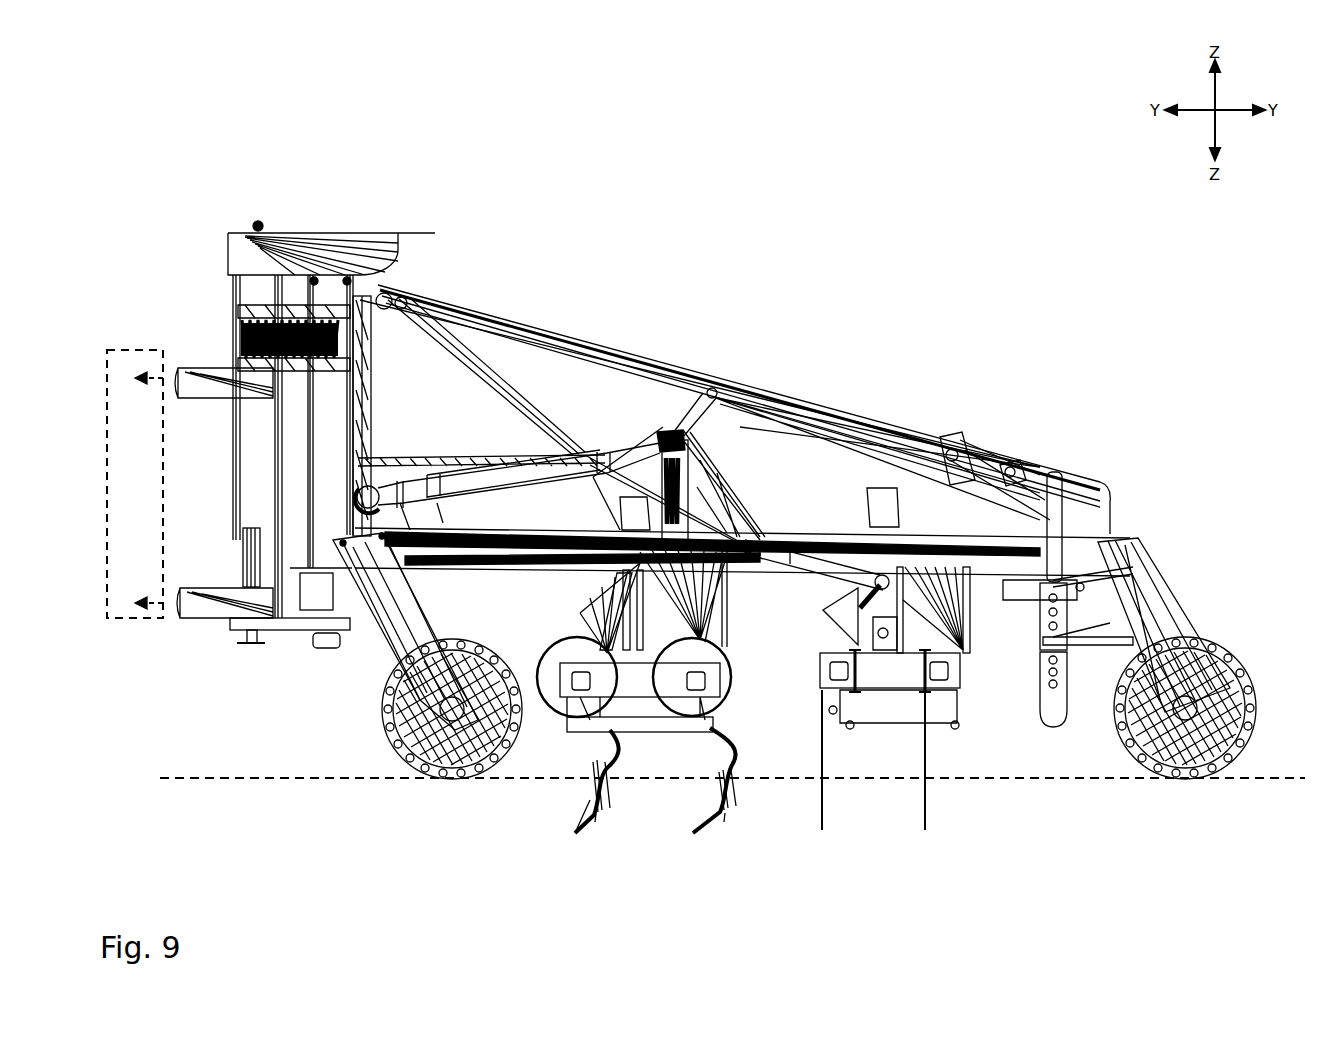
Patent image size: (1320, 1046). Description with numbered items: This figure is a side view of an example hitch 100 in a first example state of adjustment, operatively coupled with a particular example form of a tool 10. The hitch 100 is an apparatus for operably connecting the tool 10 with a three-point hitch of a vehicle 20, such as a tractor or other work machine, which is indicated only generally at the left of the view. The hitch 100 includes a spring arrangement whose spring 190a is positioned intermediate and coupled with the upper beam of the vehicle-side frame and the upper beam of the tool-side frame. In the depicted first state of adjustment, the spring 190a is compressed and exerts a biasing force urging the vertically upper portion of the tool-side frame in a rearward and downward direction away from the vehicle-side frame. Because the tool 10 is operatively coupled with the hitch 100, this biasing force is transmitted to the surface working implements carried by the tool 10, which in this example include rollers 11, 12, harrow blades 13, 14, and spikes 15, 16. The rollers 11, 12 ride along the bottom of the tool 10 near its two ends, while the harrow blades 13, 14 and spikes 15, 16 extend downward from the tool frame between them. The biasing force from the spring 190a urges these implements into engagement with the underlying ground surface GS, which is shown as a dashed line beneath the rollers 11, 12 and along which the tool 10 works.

The hitch 100 is at (286, 138).
The tool 10 is at (860, 288).
The spring 190a is at (299, 320).
The vehicle 20 is at (146, 497).
The ground surface GS is at (228, 778).
The roller 11 is at (490, 775).
The roller 12 is at (1220, 775).
The harrow blade 13 is at (607, 818).
The harrow blade 14 is at (712, 820).
The spike 15 is at (822, 830).
The spike 16 is at (927, 830).